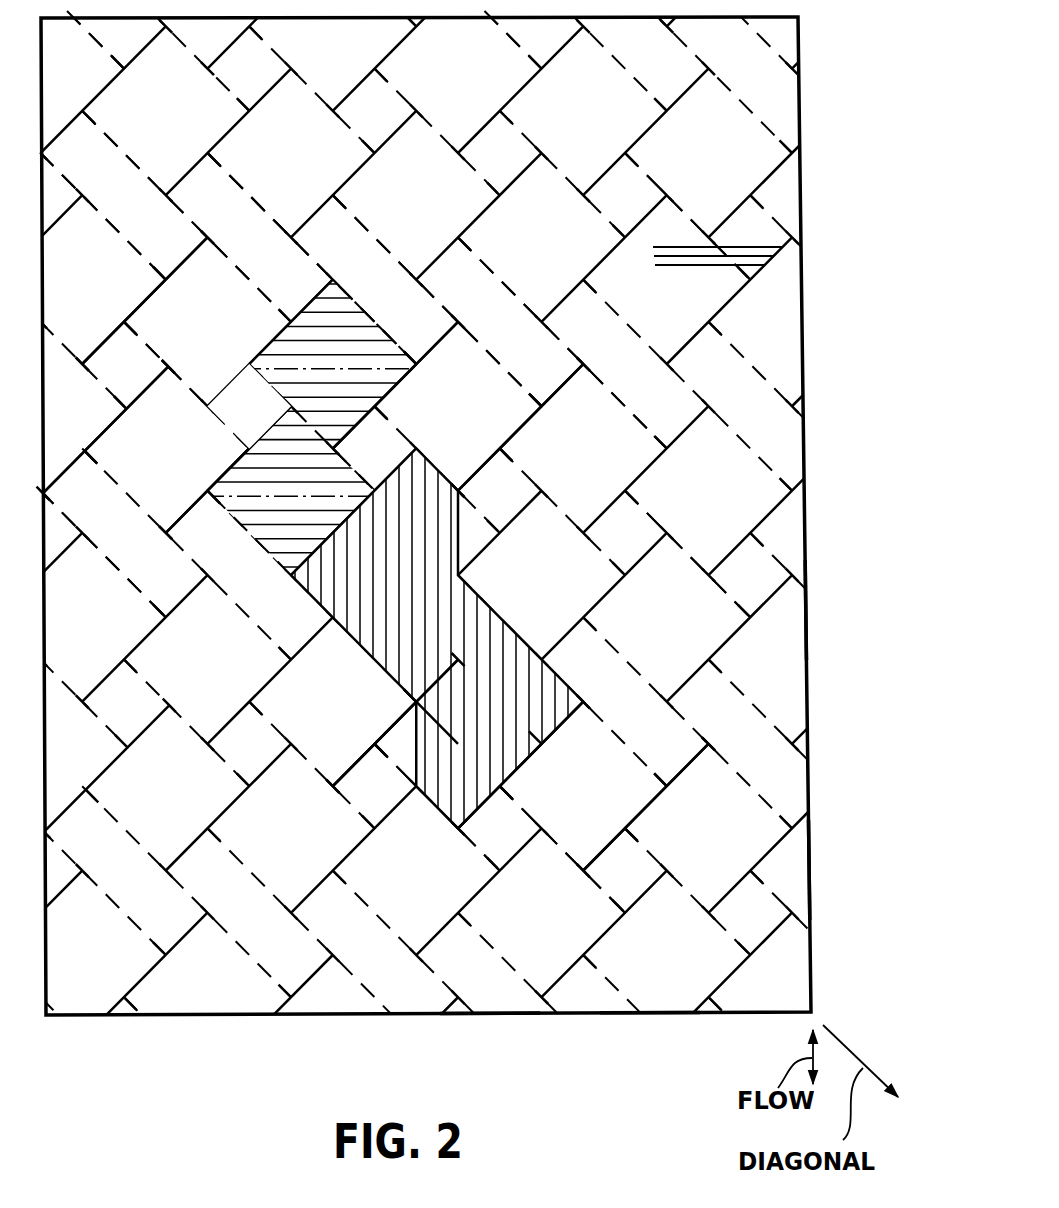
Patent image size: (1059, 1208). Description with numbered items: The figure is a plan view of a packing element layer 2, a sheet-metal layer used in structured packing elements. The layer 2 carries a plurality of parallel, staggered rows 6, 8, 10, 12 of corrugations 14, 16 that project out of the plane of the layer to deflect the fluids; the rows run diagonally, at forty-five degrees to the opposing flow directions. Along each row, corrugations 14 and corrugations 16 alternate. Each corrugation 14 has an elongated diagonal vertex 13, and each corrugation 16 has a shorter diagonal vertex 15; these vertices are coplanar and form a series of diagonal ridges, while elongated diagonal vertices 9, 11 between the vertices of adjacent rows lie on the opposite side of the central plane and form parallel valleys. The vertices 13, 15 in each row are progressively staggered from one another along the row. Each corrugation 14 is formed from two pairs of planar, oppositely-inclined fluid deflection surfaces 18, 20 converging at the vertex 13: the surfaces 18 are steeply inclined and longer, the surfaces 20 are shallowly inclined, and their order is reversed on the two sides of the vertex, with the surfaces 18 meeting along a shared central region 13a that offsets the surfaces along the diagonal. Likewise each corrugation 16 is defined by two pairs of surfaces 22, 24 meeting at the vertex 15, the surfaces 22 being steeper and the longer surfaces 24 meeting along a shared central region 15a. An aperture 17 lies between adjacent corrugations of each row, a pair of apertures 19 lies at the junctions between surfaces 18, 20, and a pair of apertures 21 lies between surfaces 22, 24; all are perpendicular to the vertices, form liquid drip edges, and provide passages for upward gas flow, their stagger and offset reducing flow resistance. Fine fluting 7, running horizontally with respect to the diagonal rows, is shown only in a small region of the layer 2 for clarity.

The packing element layer 2 is at (824, 138).
The row 6 is at (493, 1032).
The fine fluting 7 is at (693, 268).
The row 8 is at (653, 1030).
The vertex 9 is at (262, 208).
The row 10 is at (824, 864).
The vertex 11 is at (150, 352).
The row 12 is at (824, 608).
The vertex 13 is at (365, 228).
The central region 13a is at (196, 230).
The corrugation 14 is at (138, 273).
The vertex 15 is at (572, 188).
The central region 15a is at (310, 428).
The corrugation 16 is at (400, 402).
The aperture 17 is at (272, 342).
The fluid deflection surface 18 is at (351, 620).
The aperture 19 is at (478, 547).
The fluid deflection surface 20 is at (401, 550).
The aperture 21 is at (400, 378).
The fluid deflection surface 22 is at (233, 418).
The fluid deflection surface 24 is at (321, 384).